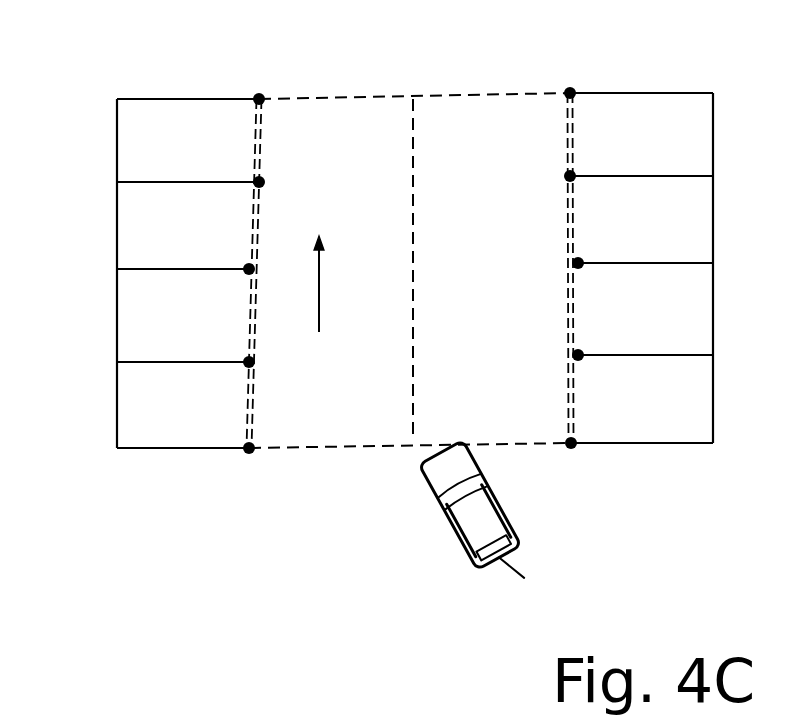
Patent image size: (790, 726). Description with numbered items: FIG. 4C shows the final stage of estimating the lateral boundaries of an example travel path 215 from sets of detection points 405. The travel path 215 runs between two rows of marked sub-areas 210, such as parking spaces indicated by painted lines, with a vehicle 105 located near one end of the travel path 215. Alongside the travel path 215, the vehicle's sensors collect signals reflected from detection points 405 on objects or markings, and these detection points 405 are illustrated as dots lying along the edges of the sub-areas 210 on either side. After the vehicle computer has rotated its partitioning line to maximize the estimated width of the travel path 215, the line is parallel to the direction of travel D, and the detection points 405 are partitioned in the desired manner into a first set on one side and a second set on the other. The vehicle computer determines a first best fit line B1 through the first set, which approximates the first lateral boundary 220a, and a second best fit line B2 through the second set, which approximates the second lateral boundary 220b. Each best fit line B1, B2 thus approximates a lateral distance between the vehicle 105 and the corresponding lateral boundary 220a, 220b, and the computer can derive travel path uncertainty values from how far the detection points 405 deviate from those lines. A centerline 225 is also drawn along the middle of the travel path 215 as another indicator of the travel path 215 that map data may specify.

The vehicle 105 is at (491, 628).
The sub-area 210 is at (139, 397).
The travel path 215 is at (326, 464).
The first lateral boundary 220a is at (257, 232).
The second lateral boundary 220b is at (568, 222).
The centerline 225 is at (413, 410).
The detection points 405 is at (259, 99).
The first best fit line B1 is at (260, 158).
The second best fit line B2 is at (568, 315).
The direction of travel D is at (318, 295).